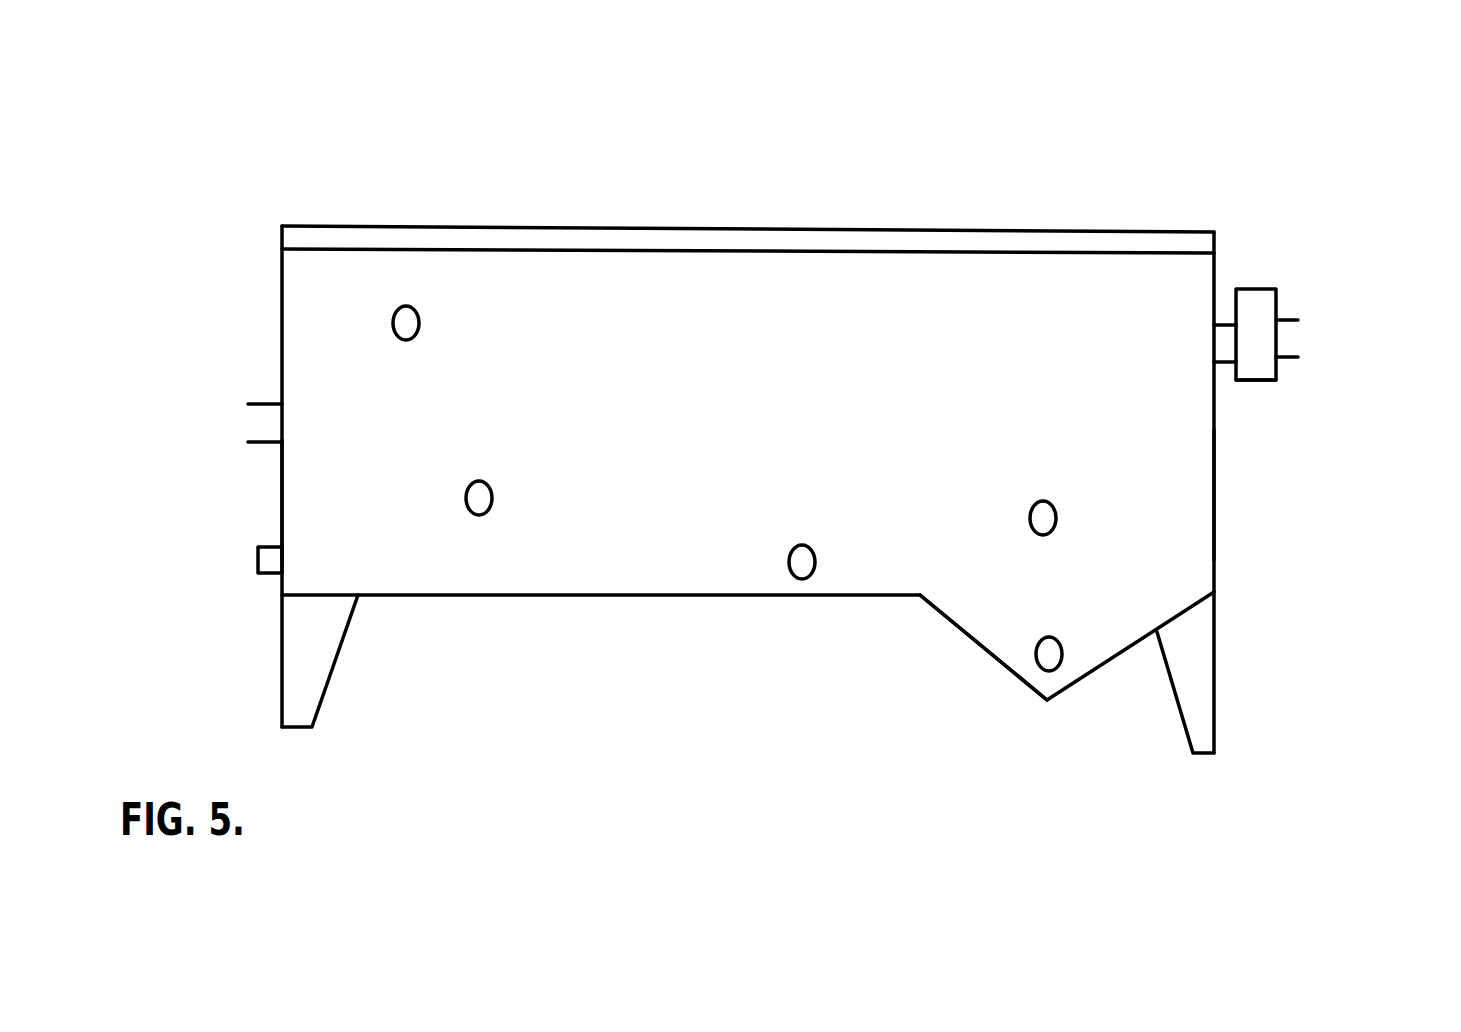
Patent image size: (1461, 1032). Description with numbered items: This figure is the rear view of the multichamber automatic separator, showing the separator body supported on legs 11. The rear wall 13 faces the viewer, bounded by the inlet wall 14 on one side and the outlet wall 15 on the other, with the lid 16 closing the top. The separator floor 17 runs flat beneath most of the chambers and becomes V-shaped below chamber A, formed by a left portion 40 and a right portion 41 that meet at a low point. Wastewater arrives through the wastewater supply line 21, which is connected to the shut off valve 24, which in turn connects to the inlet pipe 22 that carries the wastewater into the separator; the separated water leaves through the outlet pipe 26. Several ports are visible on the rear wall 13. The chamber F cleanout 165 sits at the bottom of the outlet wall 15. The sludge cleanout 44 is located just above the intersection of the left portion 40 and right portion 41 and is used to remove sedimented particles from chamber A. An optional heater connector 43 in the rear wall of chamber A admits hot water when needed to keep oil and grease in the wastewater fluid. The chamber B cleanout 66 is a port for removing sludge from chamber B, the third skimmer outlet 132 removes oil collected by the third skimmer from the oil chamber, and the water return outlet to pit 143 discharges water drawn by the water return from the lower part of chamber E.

The legs 11 is at (287, 661).
The rear wall 13 is at (610, 313).
The inlet wall 14 is at (1214, 510).
The outlet wall 15 is at (282, 500).
The lid 16 is at (867, 230).
The separator floor 17 is at (678, 598).
The wastewater supply line 21 is at (1300, 320).
The inlet pipe 22 is at (1220, 320).
The shut off valve 24 is at (1262, 382).
The outlet pipe 26 is at (262, 404).
The left portion 40 is at (1100, 668).
The right portion 41 is at (950, 620).
The heater connector 43 is at (1056, 525).
The sludge cleanout 44 is at (1040, 672).
The chamber B cleanout 66 is at (805, 580).
The third skimmer outlet 132 is at (470, 516).
The water return outlet to pit 143 is at (393, 322).
The chamber F cleanout 165 is at (262, 575).